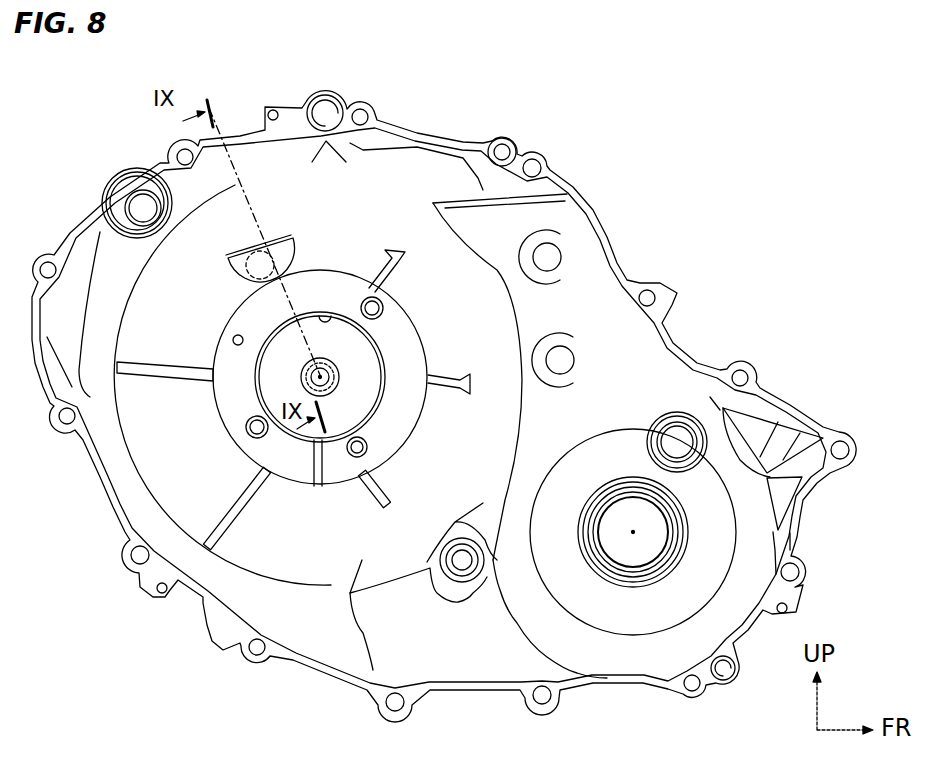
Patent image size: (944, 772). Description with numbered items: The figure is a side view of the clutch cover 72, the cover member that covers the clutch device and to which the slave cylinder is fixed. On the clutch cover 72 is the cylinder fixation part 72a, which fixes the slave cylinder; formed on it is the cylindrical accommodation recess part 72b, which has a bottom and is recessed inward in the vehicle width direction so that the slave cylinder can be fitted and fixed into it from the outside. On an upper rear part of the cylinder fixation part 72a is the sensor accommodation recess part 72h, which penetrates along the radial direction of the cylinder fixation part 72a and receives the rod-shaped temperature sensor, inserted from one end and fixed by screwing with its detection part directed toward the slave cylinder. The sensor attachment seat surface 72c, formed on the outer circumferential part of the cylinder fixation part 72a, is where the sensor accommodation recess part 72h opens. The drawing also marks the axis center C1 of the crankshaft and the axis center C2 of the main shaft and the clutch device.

The clutch cover 72 is at (606, 214).
The cylinder fixation part 72a is at (397, 347).
The accommodation recess part 72b is at (327, 318).
The sensor attachment seat surface 72c is at (272, 240).
The sensor accommodation recess part 72h is at (258, 267).
The axis center of the crankshaft C1 is at (634, 537).
The axis center of the main shaft and clutch device C2 is at (327, 379).